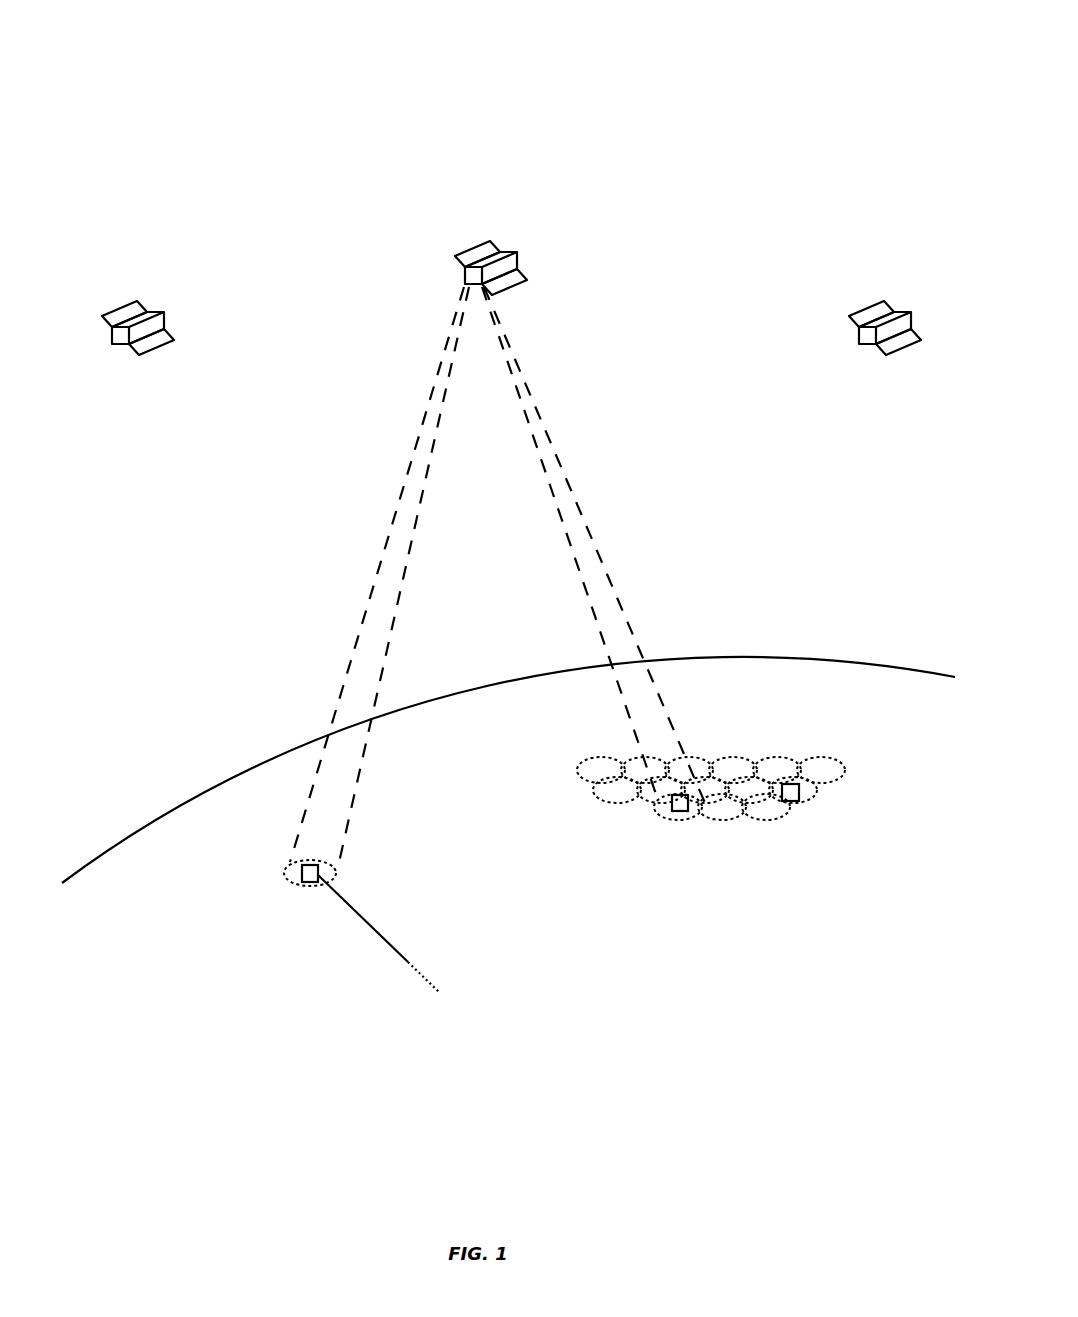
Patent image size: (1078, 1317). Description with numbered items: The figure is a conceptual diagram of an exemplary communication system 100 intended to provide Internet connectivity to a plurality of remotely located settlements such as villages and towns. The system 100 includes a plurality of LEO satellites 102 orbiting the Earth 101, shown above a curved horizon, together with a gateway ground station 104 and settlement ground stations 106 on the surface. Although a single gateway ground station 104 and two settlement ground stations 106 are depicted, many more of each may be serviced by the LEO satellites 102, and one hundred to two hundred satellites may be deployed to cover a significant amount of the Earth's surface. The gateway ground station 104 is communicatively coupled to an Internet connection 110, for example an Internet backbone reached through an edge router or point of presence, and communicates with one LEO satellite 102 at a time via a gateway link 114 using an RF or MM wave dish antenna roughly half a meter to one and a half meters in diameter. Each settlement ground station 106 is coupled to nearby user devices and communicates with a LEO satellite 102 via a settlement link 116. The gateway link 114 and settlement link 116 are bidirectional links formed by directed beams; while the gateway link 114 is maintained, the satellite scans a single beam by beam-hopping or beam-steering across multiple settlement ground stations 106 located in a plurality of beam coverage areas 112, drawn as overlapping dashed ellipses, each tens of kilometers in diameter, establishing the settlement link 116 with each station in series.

The communication system 100 is at (108, 94).
The Earth 101 is at (130, 836).
The LEO satellite 102 is at (863, 318).
The gateway ground station 104 is at (313, 883).
The settlement ground station 106 is at (852, 818).
The Internet connection 110 is at (368, 922).
The beam coverage area 112 is at (688, 820).
The gateway link 114 is at (383, 552).
The settlement link 116 is at (582, 515).